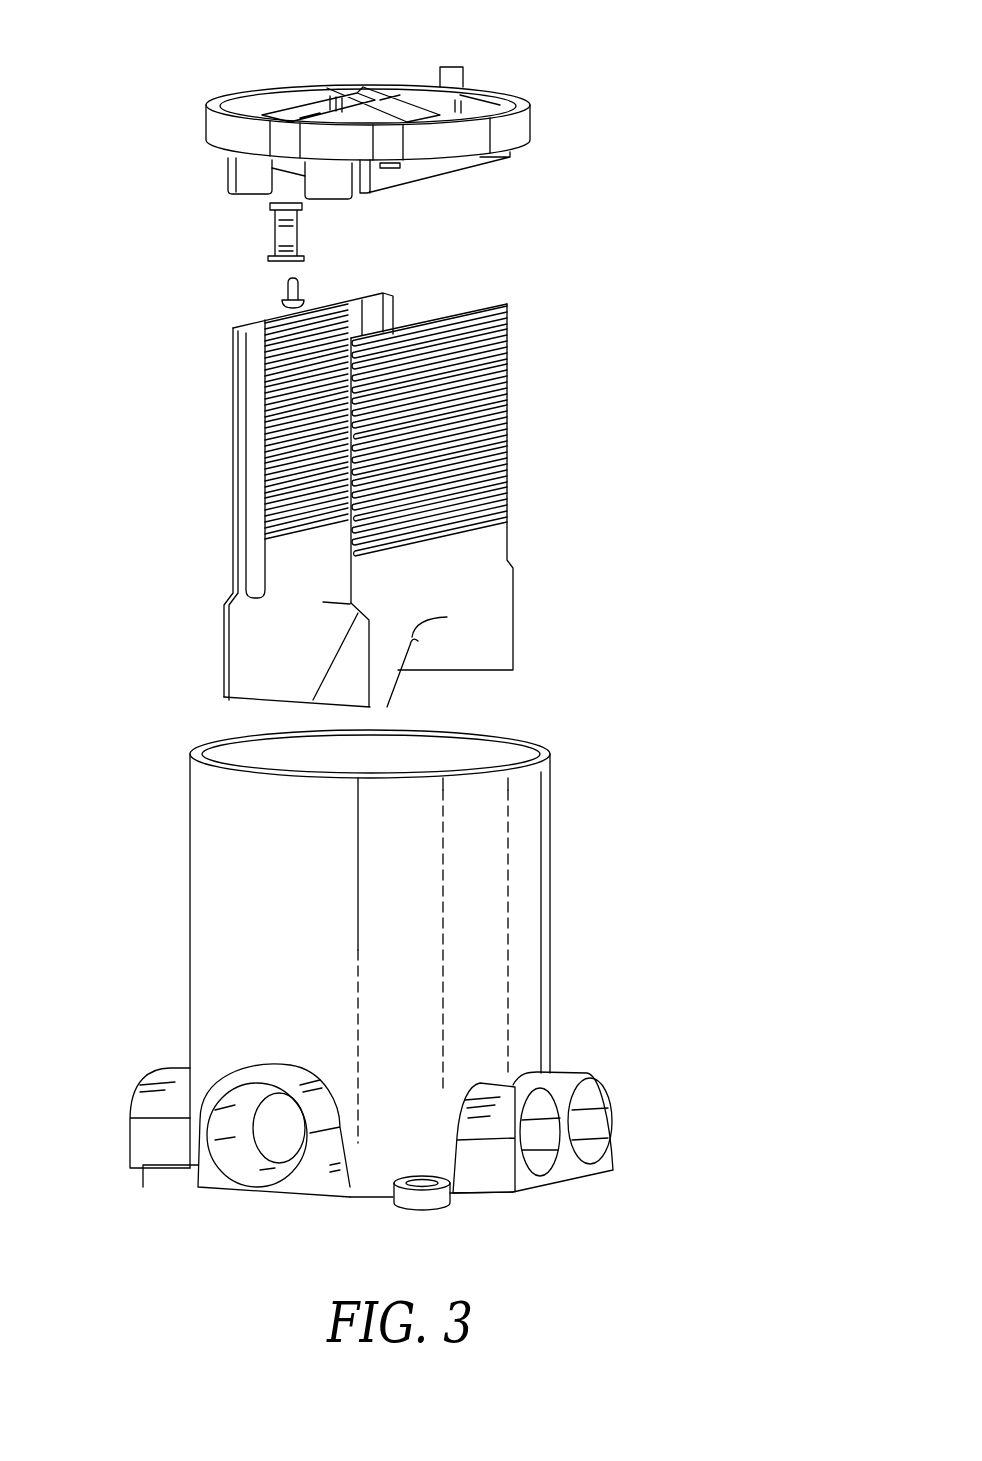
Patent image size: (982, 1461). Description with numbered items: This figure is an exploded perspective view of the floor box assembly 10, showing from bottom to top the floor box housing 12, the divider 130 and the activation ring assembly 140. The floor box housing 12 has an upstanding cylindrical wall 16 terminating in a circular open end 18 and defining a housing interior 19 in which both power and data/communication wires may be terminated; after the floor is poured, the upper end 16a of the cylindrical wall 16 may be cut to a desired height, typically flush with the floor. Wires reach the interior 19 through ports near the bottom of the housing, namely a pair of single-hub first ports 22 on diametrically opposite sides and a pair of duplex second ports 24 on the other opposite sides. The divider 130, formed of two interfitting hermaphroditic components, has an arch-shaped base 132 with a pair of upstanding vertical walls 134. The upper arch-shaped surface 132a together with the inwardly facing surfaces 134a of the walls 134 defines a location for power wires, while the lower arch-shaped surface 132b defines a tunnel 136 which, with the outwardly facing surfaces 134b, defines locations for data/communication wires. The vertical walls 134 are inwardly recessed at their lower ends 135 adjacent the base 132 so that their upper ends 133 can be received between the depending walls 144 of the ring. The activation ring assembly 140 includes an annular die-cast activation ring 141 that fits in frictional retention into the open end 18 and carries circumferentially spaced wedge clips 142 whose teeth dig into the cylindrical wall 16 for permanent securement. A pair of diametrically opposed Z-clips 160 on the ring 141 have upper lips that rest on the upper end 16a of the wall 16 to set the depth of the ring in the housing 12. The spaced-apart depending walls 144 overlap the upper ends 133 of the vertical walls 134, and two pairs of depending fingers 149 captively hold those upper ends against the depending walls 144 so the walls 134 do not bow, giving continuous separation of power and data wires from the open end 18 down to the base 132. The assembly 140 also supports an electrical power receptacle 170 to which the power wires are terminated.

The floor box assembly 10 is at (740, 585).
The floor box housing 12 is at (550, 853).
The cylindrical wall 16 is at (278, 768).
The upper end of cylindrical wall 16a is at (545, 752).
The circular open end 18 is at (238, 755).
The housing interior 19 is at (448, 750).
The first ports 22 is at (243, 1172).
The second ports 24 is at (598, 1126).
The divider 130 is at (518, 460).
The arch-shaped base 132 is at (348, 683).
The upper arch-shaped surface 132a is at (357, 638).
The lower arch-shaped surface 132b is at (438, 637).
The upper ends of vertical walls 133 is at (255, 322).
The vertical walls 134 is at (488, 350).
The inwardly facing surfaces 134a is at (280, 347).
The outwardly facing surfaces 134b is at (483, 480).
The lower ends of vertical walls 135 is at (228, 598).
The tunnel 136 is at (407, 663).
The activation ring assembly 140 is at (542, 113).
The activation ring 141 is at (260, 100).
The wedge clips 142 is at (218, 138).
The depending vertical walls 144 is at (233, 173).
The depending fingers 149 is at (255, 178).
The Z-clips 160 is at (452, 73).
The electrical power receptacle 170 is at (508, 397).